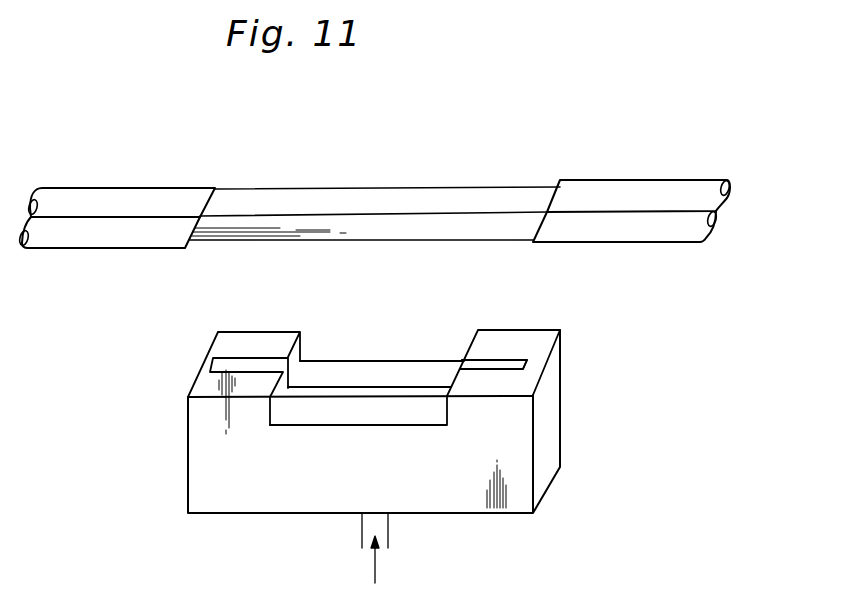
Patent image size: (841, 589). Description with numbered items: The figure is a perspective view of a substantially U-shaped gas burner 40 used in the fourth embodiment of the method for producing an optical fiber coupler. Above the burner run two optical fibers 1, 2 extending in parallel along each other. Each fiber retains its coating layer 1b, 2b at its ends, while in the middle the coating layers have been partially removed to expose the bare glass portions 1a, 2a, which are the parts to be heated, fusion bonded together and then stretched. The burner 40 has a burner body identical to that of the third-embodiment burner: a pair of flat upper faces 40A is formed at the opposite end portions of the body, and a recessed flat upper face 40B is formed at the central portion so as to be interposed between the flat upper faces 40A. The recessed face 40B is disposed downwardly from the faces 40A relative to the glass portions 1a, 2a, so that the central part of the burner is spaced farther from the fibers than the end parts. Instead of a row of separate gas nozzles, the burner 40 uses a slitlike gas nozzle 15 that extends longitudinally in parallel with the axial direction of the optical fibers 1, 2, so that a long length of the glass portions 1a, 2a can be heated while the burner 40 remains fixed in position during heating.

The optical fiber 1 is at (615, 160).
The glass portion 1a is at (440, 191).
The coating layer 1b is at (130, 200).
The optical fiber 2 is at (615, 250).
The glass portion 2a is at (372, 228).
The coating layer 2b is at (113, 237).
The slitlike gas nozzle 15 is at (502, 363).
The gas burner 40 is at (563, 437).
The flat upper faces 40A is at (240, 345).
The recessed flat upper face 40B is at (417, 423).